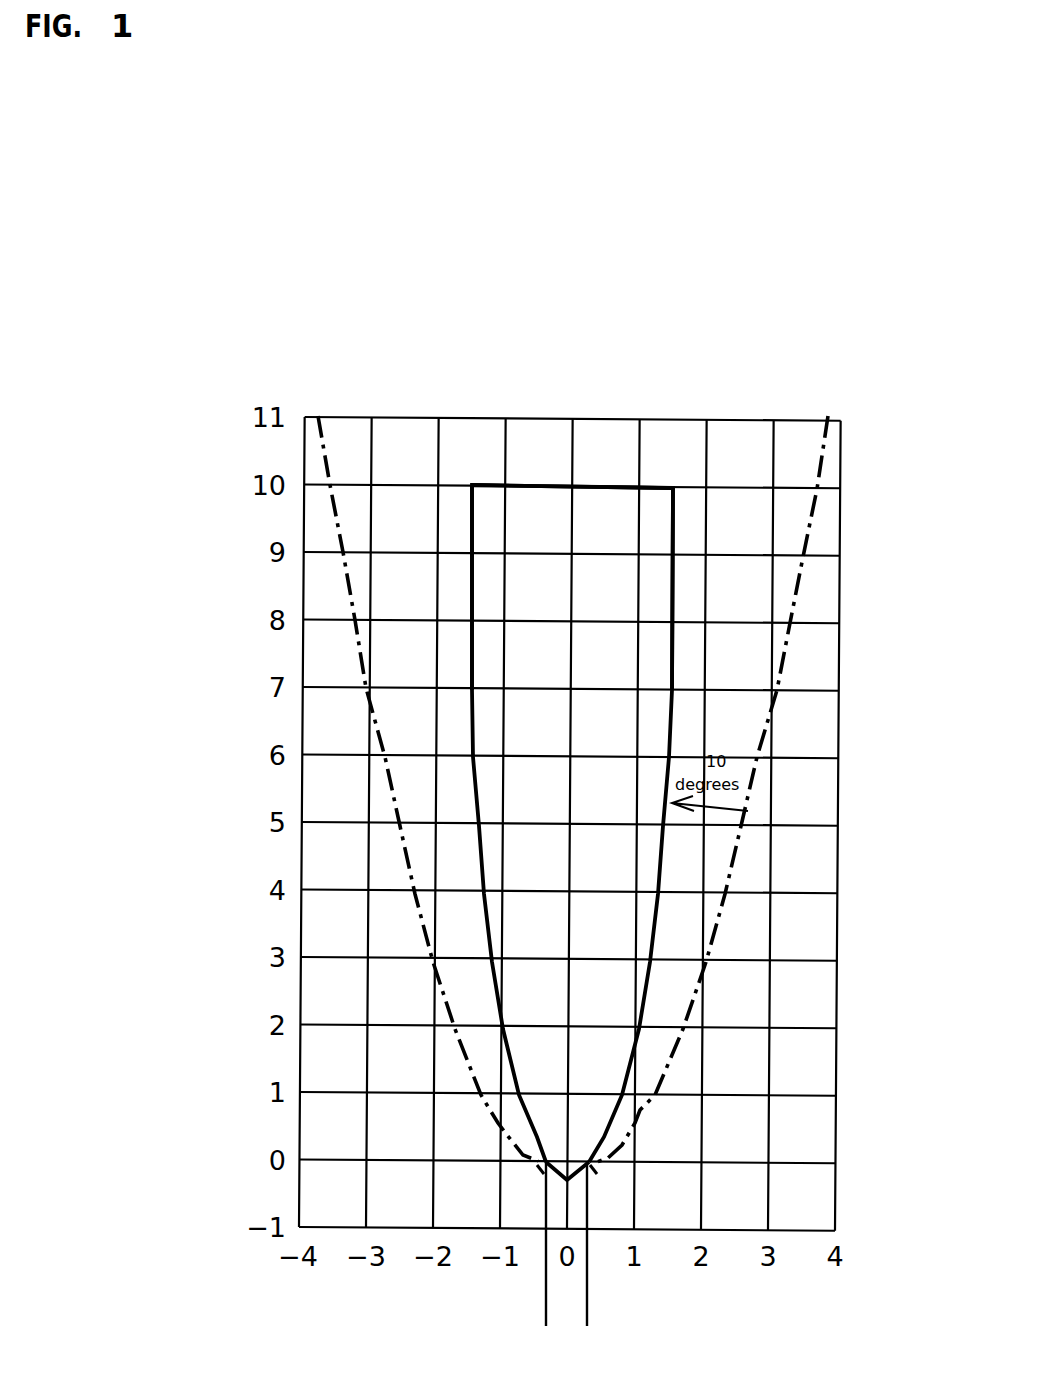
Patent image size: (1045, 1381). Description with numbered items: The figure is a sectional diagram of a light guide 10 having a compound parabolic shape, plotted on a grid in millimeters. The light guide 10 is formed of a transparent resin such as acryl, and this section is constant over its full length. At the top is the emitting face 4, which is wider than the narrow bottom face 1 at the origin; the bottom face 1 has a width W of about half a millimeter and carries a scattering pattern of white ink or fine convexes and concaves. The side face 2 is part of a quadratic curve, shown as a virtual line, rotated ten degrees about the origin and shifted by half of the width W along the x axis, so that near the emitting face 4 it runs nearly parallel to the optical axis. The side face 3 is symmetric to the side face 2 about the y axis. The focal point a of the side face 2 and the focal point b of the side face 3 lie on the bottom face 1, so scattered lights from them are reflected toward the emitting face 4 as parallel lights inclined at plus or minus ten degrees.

The bottom face 1 is at (588, 1167).
The side face 2 is at (673, 663).
The side face 3 is at (471, 662).
The emitting face 4 is at (600, 487).
The light guide 10 is at (700, 598).
The focal point a is at (548, 1162).
The focal point b is at (592, 1168).
The width of the bottom face W is at (478, 1311).